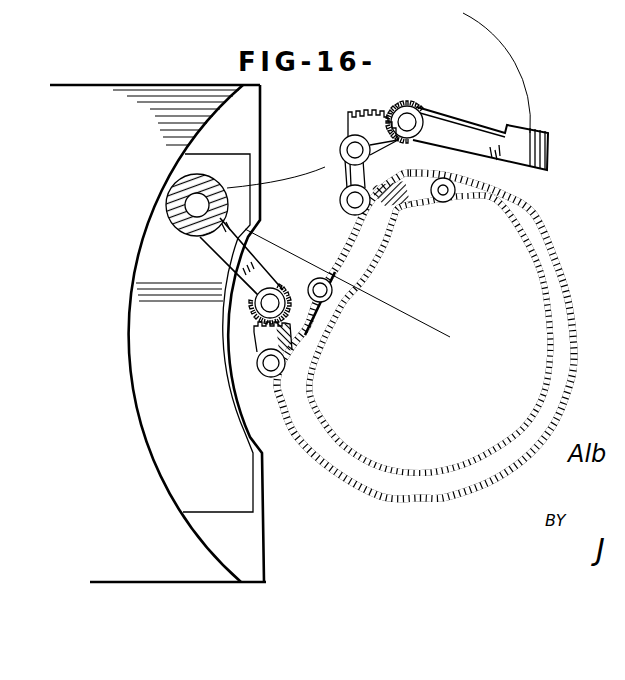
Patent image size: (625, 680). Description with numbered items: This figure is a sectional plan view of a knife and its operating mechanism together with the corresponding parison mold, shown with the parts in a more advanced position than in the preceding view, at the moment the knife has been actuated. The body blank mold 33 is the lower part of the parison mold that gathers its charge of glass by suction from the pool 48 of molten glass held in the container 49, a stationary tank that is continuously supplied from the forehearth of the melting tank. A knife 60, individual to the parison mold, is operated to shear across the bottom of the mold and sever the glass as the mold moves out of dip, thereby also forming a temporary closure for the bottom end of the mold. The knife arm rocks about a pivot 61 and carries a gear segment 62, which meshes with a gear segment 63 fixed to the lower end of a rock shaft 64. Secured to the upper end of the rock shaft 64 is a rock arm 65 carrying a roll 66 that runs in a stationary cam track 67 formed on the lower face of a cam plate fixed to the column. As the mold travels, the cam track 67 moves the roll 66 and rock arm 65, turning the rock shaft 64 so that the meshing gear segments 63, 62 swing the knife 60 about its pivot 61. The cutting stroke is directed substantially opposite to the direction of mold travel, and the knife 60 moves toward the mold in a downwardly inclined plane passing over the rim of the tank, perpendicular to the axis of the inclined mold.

The body blank mold 33 is at (199, 205).
The pool of molten glass 48 is at (240, 485).
The container 49 is at (94, 102).
The knife 60 is at (193, 237).
The pivot 61 is at (262, 306).
The gear segment 62 is at (305, 283).
The gear segment 63 is at (260, 338).
The rock shaft 64 is at (268, 365).
The rock arm 65 is at (310, 323).
The roll 66 is at (455, 189).
The cam track 67 is at (538, 237).